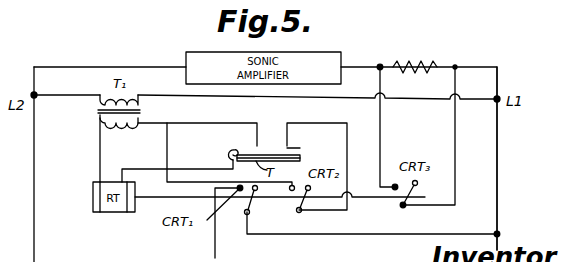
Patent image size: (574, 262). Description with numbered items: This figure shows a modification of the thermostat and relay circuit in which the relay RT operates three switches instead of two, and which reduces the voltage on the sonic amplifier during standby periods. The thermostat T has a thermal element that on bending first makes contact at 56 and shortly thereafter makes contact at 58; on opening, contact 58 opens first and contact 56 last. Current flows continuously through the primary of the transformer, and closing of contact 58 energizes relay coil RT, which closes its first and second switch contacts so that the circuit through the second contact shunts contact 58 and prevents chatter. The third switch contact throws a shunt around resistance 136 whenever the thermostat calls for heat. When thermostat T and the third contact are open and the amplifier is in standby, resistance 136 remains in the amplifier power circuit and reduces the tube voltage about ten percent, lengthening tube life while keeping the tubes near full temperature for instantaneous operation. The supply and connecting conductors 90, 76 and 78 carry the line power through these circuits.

The resistance 136 is at (424, 62).
The power line L2 conductor 90 is at (34, 178).
The contact 58 is at (257, 147).
The contact 56 is at (286, 147).
The power line L1 conductor 76 is at (497, 160).
The conductor 78 is at (323, 236).